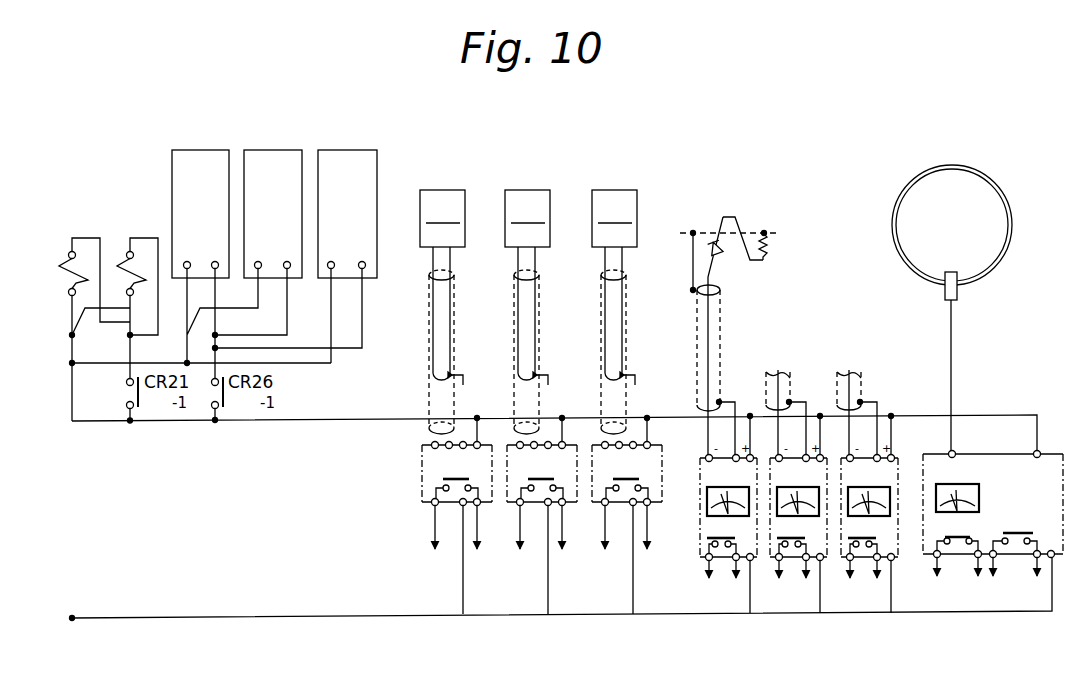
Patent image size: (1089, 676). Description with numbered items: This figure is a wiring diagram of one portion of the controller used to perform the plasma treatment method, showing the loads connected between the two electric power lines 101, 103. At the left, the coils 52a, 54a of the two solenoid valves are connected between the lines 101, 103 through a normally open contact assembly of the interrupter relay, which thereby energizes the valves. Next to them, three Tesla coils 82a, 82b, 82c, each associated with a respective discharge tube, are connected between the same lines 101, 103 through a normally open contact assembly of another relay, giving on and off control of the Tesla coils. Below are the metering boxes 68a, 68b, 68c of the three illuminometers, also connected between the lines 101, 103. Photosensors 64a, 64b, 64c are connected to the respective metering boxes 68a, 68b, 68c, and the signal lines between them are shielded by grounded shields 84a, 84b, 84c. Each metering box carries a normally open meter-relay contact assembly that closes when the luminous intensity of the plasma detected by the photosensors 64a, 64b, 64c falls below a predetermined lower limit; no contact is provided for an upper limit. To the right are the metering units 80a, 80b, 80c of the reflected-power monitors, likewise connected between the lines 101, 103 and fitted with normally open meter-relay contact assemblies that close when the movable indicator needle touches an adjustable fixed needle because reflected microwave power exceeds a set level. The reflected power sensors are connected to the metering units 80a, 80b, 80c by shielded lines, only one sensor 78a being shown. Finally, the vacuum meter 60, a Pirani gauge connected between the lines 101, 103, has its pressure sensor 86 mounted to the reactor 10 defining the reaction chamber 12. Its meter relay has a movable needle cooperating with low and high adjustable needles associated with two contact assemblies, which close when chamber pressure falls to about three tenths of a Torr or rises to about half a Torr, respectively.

The reactor 10 is at (1001, 199).
The reaction chamber 12 is at (962, 218).
The coil of solenoid valve 52a is at (65, 255).
The coil of solenoid valve 54a is at (125, 255).
The vacuum meter 60 is at (1003, 444).
The photosensor 64a is at (442, 287).
The photosensor 64b is at (527, 287).
The photosensor 64c is at (614, 287).
The metering box 68a is at (420, 492).
The metering box 68b is at (508, 503).
The metering box 68c is at (594, 503).
The reflected power sensor 78a is at (744, 268).
The metering unit 80a is at (700, 540).
The metering unit 80b is at (771, 560).
The metering unit 80c is at (842, 560).
The Tesla coil 82a is at (204, 150).
The Tesla coil 82b is at (278, 150).
The Tesla coil 82c is at (352, 150).
The grounded shield 84a is at (482, 350).
The grounded shield 84b is at (567, 350).
The grounded shield 84c is at (654, 350).
The pressure sensor 86 is at (938, 293).
The power line 101 is at (530, 430).
The power line 103 is at (538, 593).